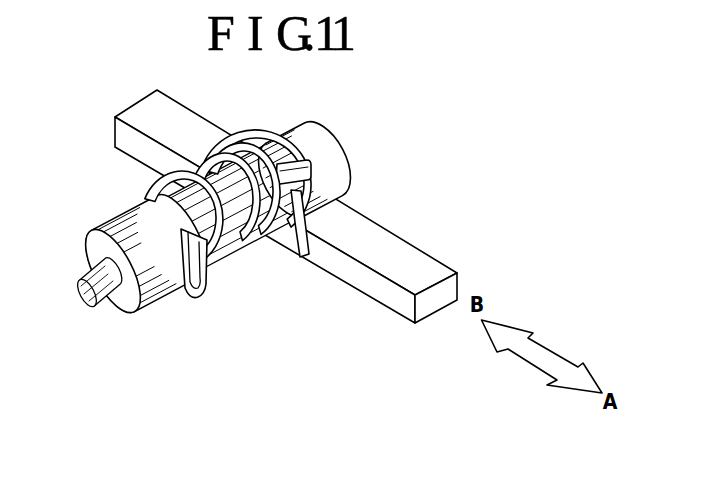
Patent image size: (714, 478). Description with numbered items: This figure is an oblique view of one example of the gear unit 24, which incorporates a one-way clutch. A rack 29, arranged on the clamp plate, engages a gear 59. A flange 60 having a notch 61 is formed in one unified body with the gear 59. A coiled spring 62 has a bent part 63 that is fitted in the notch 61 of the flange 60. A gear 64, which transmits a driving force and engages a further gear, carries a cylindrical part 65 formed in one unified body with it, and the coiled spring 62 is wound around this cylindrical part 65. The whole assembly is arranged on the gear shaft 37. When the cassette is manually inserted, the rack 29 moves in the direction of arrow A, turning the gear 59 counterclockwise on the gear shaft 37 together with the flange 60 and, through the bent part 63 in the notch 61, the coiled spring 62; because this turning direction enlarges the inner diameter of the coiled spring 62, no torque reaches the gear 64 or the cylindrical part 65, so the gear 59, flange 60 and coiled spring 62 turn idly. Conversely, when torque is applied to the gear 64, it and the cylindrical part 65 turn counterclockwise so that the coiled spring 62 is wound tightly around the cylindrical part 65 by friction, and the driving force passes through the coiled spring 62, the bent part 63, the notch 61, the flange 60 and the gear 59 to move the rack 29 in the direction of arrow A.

The gear unit 24 is at (213, 216).
The rack 29 is at (418, 262).
The gear shaft 37 is at (80, 292).
The gear 59 is at (338, 148).
The flange 60 is at (259, 134).
The notch 61 is at (297, 160).
The coiled spring 62 is at (205, 279).
The bent part 63 is at (323, 196).
The gear 64 is at (153, 294).
The cylindrical part 65 is at (145, 207).